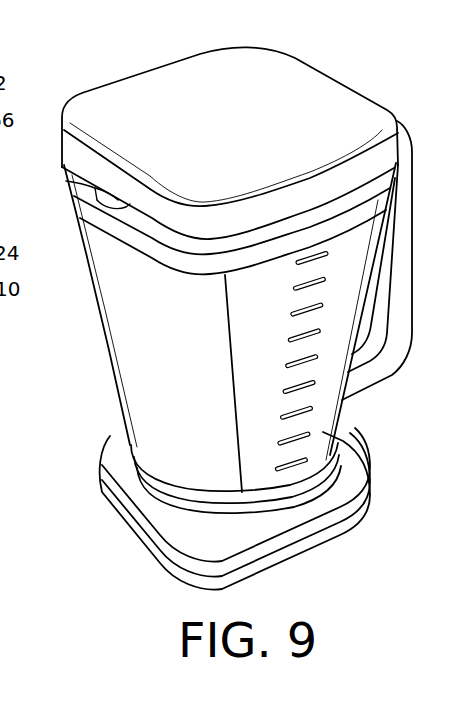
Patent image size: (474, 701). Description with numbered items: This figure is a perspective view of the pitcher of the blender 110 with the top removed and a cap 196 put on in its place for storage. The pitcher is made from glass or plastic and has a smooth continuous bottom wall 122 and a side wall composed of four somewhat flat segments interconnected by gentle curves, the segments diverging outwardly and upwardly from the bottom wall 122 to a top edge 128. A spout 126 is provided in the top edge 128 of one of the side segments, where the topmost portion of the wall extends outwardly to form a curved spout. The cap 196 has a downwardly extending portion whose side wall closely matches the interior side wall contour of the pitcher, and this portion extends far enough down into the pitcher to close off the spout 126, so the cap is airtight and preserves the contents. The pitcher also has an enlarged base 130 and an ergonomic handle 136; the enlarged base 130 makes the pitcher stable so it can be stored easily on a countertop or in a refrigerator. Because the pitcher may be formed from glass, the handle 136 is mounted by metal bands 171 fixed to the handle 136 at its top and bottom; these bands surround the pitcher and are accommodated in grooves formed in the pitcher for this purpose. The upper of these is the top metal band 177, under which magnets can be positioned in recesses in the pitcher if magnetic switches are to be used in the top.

The cap 196 is at (300, 83).
The top edge 128 is at (94, 189).
The spout 126 is at (98, 201).
The metal bands 171 is at (143, 248).
The blender 110 is at (90, 388).
The handle 136 is at (383, 365).
The top metal band 177 is at (166, 467).
The bottom wall 122 is at (163, 483).
The enlarged base 130 is at (143, 535).